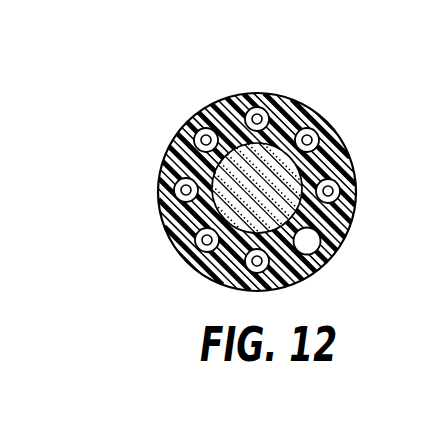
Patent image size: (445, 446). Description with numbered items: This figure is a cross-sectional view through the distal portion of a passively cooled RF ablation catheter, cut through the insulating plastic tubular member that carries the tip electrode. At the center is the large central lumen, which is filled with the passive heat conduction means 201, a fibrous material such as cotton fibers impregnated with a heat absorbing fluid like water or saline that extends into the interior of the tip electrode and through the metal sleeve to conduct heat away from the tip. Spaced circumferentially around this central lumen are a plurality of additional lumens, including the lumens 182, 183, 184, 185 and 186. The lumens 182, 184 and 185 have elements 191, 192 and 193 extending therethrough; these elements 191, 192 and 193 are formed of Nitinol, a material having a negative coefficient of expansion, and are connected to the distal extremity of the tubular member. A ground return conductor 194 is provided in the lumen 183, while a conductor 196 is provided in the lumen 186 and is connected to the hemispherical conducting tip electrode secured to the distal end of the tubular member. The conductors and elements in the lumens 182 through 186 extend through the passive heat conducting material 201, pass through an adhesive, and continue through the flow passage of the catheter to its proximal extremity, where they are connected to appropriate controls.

The lumen 182 is at (340, 181).
The lumen 183 is at (288, 283).
The lumen 184 is at (203, 253).
The lumen 185 is at (212, 140).
The lumen 186 is at (233, 105).
The element 191 is at (350, 229).
The element 192 is at (204, 238).
The element 193 is at (203, 128).
The ground return conductor 194 is at (237, 287).
The conductor 196 is at (262, 108).
The passive heat conduction means 201 is at (297, 105).